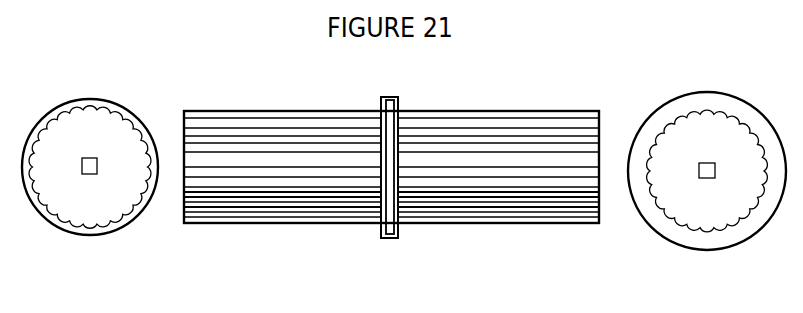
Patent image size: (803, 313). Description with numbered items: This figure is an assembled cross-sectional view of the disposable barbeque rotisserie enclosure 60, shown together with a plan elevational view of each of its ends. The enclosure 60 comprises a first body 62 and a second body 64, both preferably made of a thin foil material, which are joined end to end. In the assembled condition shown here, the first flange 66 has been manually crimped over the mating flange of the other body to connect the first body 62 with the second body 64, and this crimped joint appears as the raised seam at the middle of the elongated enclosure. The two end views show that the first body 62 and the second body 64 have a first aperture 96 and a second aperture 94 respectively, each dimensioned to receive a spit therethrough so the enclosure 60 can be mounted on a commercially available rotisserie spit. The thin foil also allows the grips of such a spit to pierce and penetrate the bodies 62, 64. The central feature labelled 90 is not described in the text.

The disposable barbeque rotisserie enclosure 60 is at (245, 92).
The first body 62 is at (538, 224).
The second body 64 is at (240, 224).
The first flange 66 is at (383, 118).
The central rib of flange 90 is at (391, 101).
The second aperture 94 is at (89, 175).
The first aperture 96 is at (709, 179).